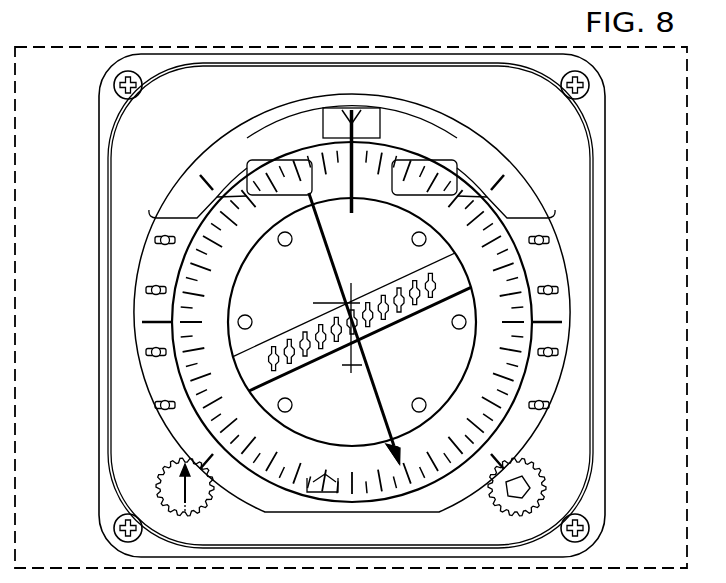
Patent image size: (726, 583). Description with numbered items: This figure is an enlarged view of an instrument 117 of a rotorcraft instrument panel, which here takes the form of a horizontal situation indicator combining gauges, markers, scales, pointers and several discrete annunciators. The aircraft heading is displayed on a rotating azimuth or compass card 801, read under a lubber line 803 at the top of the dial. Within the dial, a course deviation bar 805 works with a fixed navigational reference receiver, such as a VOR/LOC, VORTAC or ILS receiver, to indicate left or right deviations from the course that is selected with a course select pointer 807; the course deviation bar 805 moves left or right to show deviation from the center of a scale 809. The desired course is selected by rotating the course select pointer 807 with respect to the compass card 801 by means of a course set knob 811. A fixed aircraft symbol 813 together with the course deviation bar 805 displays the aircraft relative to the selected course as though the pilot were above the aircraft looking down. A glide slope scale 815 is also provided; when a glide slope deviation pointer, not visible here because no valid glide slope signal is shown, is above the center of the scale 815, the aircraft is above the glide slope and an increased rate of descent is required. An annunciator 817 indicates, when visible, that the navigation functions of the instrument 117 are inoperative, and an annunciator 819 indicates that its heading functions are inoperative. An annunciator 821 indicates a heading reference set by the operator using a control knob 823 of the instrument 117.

The instrument 117 is at (88, 193).
The compass card 801 is at (135, 307).
The lubber line 803 is at (356, 217).
The course deviation bar 805 is at (375, 378).
The course select pointer 807 is at (390, 456).
The scale 809 is at (403, 316).
The course set knob 811 is at (157, 480).
The fixed aircraft symbol 813 is at (343, 365).
The scale 815 is at (162, 337).
The annunciator 817 is at (247, 177).
The annunciator 819 is at (455, 173).
The annunciator 821 is at (307, 492).
The control knob 823 is at (542, 495).